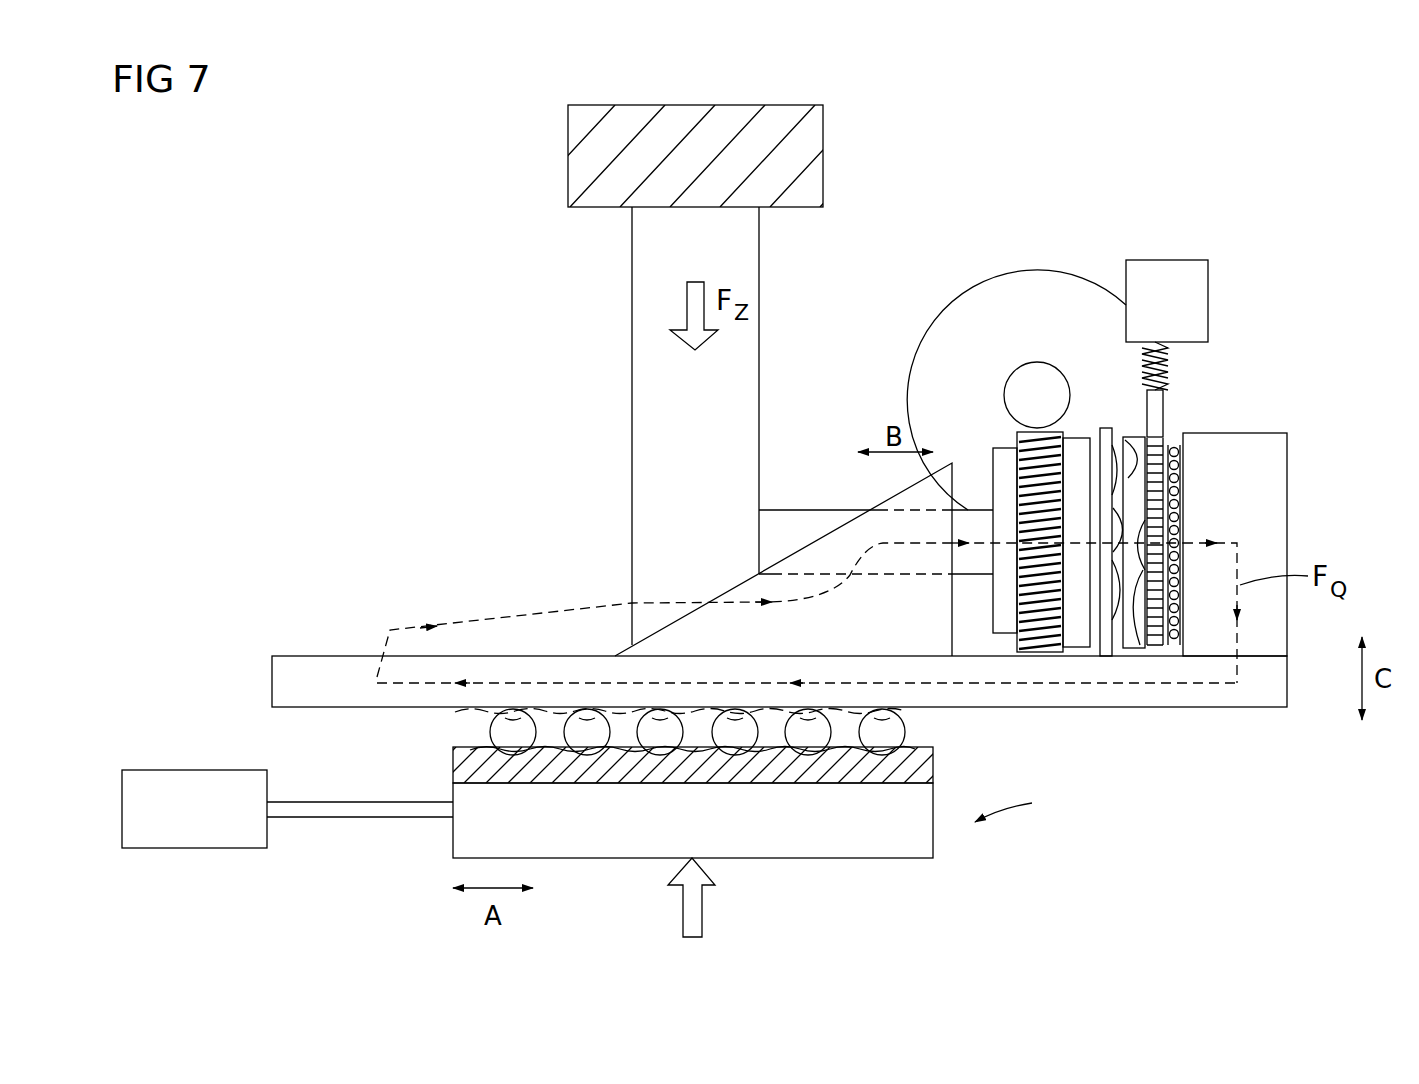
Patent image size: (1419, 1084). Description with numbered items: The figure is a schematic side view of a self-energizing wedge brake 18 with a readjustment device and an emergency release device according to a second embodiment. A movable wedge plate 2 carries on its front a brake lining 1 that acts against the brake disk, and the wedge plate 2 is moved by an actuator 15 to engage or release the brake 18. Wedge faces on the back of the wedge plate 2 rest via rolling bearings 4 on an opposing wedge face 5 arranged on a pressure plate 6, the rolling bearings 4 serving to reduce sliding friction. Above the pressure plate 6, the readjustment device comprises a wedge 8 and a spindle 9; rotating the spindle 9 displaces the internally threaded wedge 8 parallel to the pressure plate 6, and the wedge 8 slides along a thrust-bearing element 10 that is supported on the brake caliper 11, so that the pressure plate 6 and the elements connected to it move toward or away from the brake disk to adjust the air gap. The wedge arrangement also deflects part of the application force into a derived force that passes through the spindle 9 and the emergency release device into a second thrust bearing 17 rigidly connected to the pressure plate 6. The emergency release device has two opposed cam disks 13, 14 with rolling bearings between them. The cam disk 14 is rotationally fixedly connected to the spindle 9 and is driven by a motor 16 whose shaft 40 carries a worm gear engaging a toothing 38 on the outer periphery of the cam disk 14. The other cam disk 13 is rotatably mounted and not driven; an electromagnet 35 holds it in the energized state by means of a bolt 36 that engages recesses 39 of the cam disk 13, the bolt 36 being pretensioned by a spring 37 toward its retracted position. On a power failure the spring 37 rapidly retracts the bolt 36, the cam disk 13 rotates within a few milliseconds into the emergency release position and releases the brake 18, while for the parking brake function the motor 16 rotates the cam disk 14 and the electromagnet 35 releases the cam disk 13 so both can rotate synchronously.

The brake lining 1 is at (465, 838).
The wedge plate 2 is at (463, 762).
The rolling bearings 4 is at (497, 730).
The opposing wedge face 5 is at (453, 712).
The pressure plate 6 is at (1263, 683).
The wedge 8 is at (907, 502).
The spindle 9 is at (805, 522).
The thrust-bearing element 10 is at (648, 470).
The brake caliper 11 is at (805, 160).
The cam disk 13 is at (1142, 647).
The cam disk 14 is at (1006, 625).
The rolling bearings / actuator 15 is at (183, 782).
The motor 16 is at (950, 315).
The second thrust bearing 17 is at (1263, 487).
The brake 18 is at (1022, 805).
The electromagnet 35 is at (1192, 292).
The bolt 36 is at (1160, 420).
The spring 37 is at (1168, 378).
The toothing 38 is at (1043, 645).
The recesses 39 is at (1155, 640).
The shaft 40 is at (1022, 385).